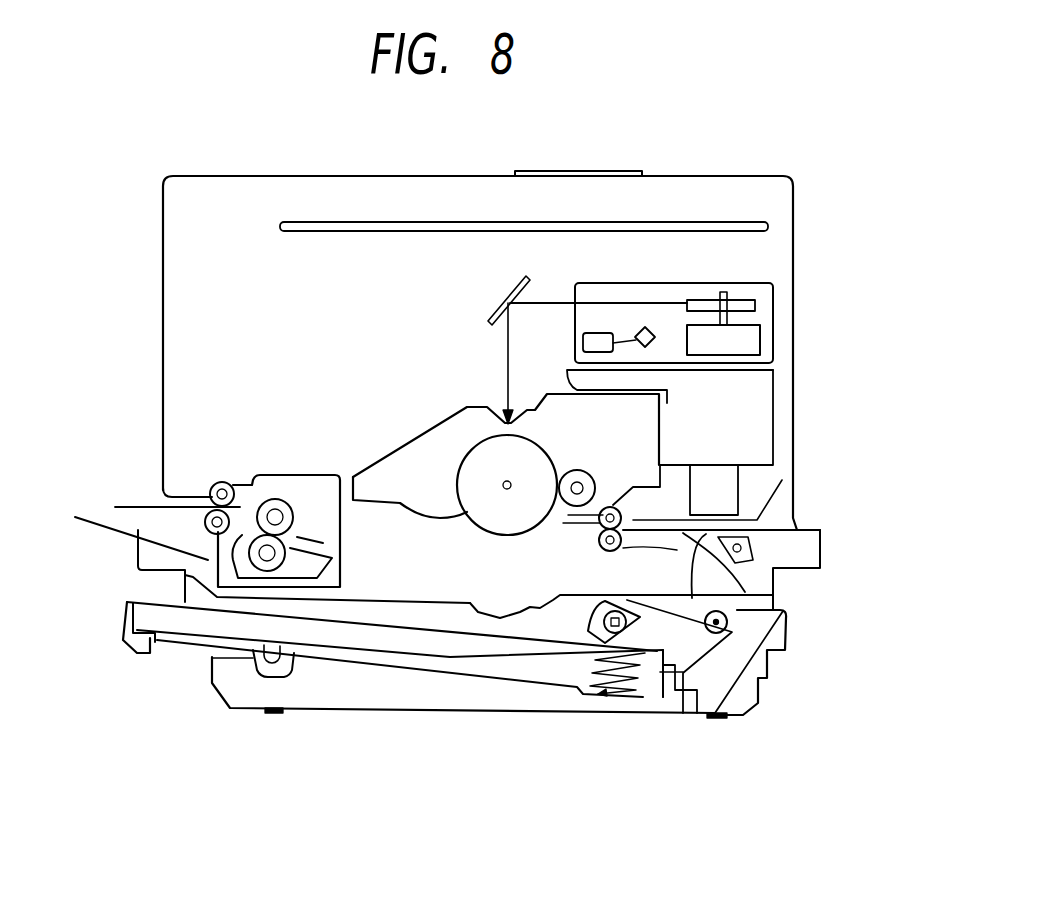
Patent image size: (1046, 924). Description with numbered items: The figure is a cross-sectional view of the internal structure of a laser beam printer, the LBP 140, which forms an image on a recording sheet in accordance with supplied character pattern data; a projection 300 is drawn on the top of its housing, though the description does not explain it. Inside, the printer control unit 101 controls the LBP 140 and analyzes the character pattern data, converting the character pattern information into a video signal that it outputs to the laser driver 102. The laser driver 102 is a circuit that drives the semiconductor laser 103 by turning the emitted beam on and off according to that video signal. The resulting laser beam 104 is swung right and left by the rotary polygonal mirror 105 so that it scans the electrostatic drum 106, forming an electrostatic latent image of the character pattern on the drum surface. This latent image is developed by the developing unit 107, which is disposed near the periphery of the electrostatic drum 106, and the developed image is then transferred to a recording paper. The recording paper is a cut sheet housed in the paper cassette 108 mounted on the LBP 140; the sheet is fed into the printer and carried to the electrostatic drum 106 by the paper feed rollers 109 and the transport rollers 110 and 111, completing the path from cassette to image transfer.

The laser beam printer 140 is at (750, 176).
The projection on housing 300 is at (598, 171).
The printer control unit 101 is at (770, 228).
The laser driver 102 is at (583, 343).
The semiconductor laser 103 is at (657, 342).
The laser beam 104 is at (653, 328).
The rotary polygonal mirror 105 is at (757, 312).
The electrostatic drum 106 is at (483, 441).
The developing unit 107 is at (400, 475).
The paper cassette 108 is at (125, 623).
The paper feed rollers 109 is at (590, 628).
The transport roller 110 is at (717, 628).
The transport roller 111 is at (608, 553).